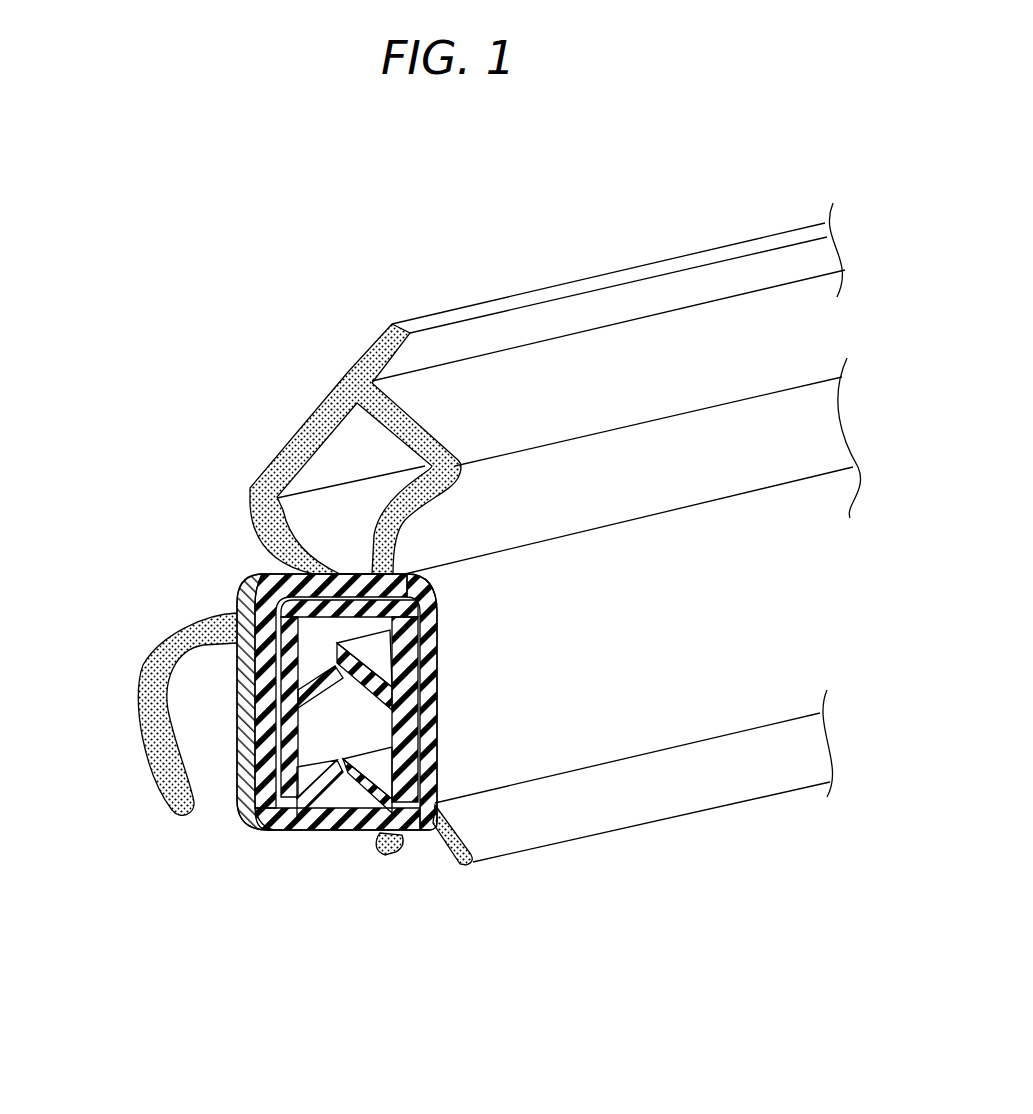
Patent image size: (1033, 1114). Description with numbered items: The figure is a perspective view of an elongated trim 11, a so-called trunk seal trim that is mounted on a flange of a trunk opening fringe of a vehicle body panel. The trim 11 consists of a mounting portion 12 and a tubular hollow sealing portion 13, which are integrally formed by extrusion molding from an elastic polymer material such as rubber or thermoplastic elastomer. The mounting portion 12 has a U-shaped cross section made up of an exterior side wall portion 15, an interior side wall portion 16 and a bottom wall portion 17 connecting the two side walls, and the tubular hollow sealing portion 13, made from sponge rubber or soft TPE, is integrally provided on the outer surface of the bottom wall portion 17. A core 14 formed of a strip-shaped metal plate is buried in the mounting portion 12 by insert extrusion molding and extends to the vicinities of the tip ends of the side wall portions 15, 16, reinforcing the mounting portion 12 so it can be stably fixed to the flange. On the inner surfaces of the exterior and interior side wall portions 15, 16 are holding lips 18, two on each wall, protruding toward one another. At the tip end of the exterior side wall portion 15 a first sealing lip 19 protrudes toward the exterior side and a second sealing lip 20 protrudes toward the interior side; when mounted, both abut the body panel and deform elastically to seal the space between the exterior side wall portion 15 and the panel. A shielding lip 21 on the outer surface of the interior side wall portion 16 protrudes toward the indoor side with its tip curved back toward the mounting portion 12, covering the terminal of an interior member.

The trim 11 is at (233, 583).
The mounting portion 12 is at (426, 590).
The tubular hollow sealing portion 13 is at (293, 433).
The core 14 is at (438, 703).
The exterior side wall portion 15 is at (440, 677).
The interior side wall portion 16 is at (250, 718).
The bottom wall portion 17 is at (407, 573).
The holding lips 18 is at (337, 672).
The first sealing lip 19 is at (460, 865).
The second sealing lip 20 is at (373, 857).
The shielding lip 21 is at (137, 750).